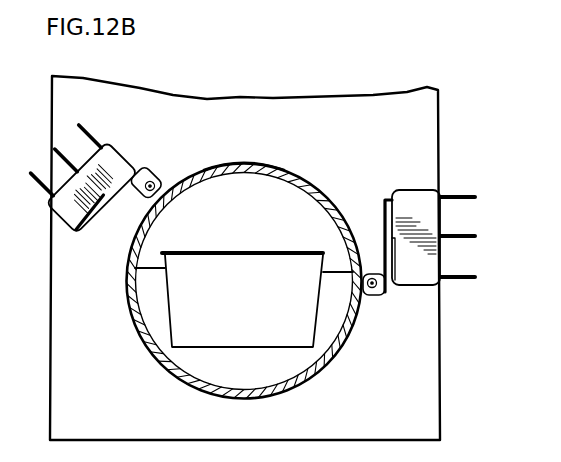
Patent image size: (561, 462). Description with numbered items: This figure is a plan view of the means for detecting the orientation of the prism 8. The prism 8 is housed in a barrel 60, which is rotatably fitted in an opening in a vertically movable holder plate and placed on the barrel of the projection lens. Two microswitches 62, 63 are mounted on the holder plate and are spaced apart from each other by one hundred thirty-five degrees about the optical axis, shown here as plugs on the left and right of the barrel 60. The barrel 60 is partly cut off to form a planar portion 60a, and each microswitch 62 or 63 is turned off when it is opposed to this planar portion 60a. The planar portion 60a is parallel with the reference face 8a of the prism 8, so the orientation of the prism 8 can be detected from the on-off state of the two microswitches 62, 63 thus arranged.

The prism 8 is at (297, 268).
The reference face 8a is at (219, 251).
The barrel 60 is at (307, 178).
The planar portion 60a is at (257, 166).
The microswitch 62 is at (115, 163).
The microswitch 63 is at (427, 197).